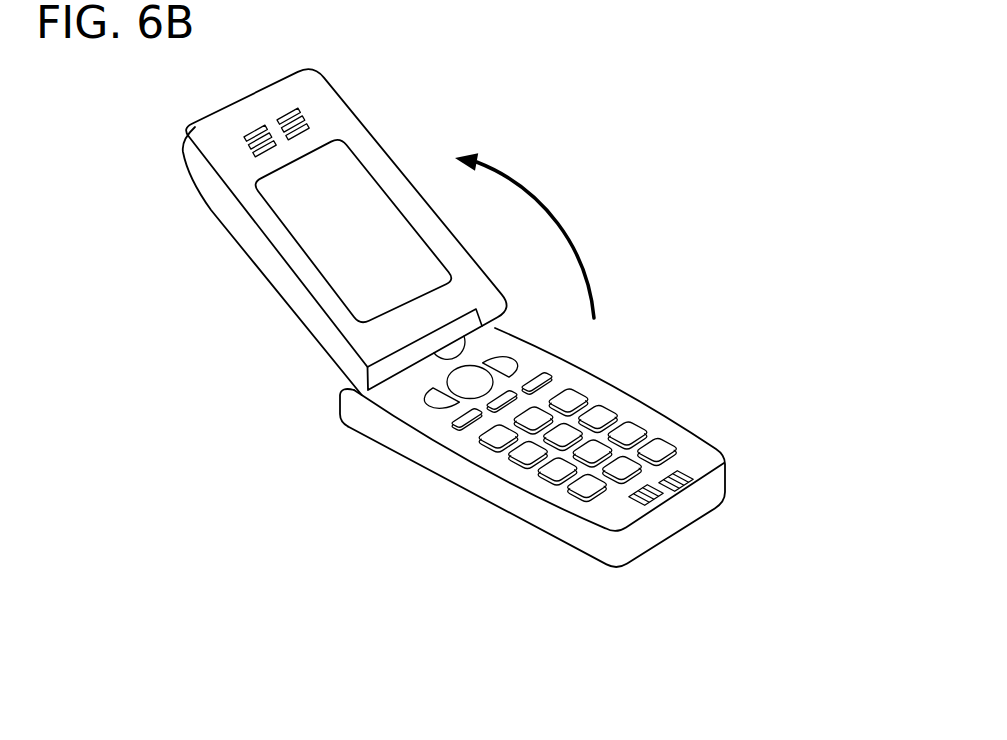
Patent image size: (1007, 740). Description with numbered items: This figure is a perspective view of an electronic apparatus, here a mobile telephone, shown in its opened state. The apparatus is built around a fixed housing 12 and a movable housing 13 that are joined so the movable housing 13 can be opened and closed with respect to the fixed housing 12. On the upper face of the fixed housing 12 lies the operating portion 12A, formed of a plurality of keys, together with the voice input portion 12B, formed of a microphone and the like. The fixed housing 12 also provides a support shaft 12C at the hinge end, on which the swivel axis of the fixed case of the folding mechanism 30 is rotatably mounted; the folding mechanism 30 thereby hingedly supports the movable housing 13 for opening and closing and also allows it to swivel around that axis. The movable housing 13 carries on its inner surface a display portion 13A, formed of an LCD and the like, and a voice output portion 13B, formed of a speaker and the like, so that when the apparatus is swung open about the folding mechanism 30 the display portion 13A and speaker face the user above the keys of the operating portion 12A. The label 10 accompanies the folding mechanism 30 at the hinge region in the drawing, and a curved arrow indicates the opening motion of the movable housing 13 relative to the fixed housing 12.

The mobile terminal 10 is at (290, 444).
The folding mechanism 30 is at (338, 420).
The fixed housing 12 is at (710, 513).
The operating portion 12A is at (653, 421).
The voice input portion 12B is at (690, 473).
The support shaft 12C is at (427, 363).
The movable housing 13 is at (268, 267).
The display portion 13A is at (303, 211).
The voice output portion 13B is at (250, 151).